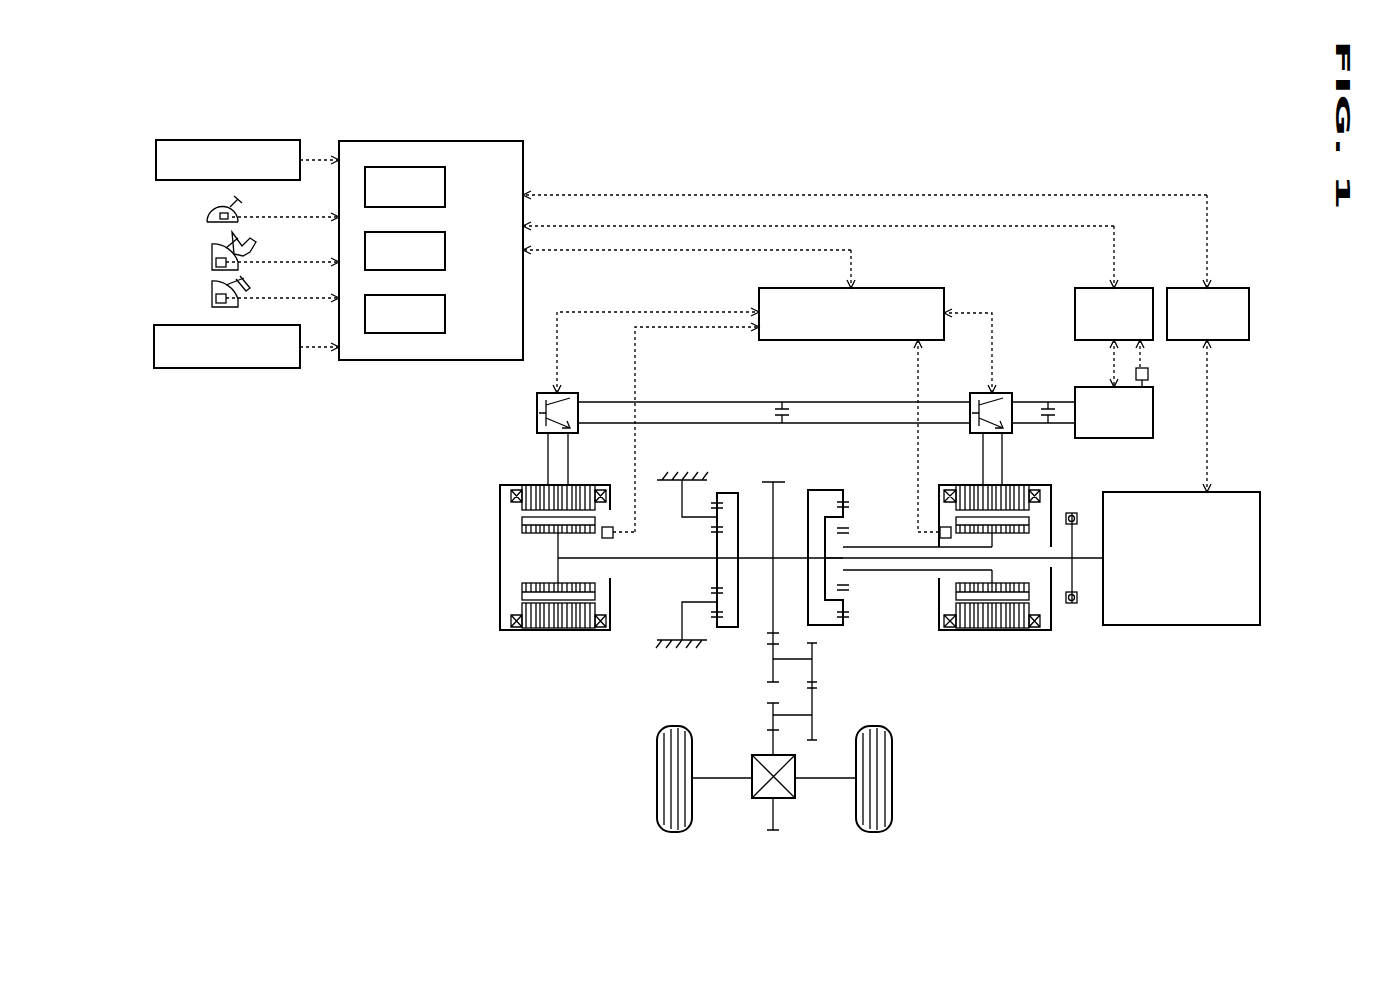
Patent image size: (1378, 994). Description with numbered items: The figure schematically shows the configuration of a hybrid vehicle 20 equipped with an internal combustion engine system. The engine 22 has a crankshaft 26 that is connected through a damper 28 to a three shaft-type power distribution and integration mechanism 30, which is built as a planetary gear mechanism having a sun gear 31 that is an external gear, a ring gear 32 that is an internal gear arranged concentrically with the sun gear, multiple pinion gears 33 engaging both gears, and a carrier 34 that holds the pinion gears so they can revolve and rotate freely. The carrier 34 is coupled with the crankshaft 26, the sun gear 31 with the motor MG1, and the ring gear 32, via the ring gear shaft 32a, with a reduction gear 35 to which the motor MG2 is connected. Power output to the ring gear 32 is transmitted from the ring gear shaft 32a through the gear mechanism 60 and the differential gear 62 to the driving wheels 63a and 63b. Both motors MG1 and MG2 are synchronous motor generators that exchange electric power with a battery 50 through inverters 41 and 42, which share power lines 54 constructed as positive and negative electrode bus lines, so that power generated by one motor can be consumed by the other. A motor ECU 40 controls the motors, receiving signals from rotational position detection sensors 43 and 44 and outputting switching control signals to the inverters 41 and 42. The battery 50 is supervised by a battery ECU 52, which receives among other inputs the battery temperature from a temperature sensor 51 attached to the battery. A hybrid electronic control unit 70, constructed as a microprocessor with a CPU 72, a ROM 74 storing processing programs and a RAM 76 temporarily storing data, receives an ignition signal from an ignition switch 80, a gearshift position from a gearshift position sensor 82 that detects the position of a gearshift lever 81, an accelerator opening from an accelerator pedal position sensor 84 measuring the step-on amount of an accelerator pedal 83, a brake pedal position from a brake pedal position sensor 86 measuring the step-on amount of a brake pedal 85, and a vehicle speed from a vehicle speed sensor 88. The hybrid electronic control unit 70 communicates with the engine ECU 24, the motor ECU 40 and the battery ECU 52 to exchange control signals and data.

The hybrid vehicle 20 is at (1029, 166).
The engine 22 is at (1262, 543).
The engine ECU 24 is at (1225, 288).
The crankshaft 26 is at (1087, 563).
The damper 28 is at (1071, 603).
The power distribution and integration mechanism 30 is at (857, 478).
The sun gear 31 is at (845, 572).
The ring gear 32 is at (845, 615).
The ring gear shaft 32a is at (757, 555).
The pinion gears 33 is at (845, 597).
The carrier 34 is at (820, 530).
The reduction gear 35 is at (728, 471).
The motor ECU 40 is at (890, 288).
The inverter 41 is at (1005, 393).
The inverter 42 is at (560, 393).
The rotational position detection sensor 43 is at (942, 527).
The rotational position detection sensor 44 is at (605, 527).
The battery 50 is at (1112, 438).
The temperature sensor 51 is at (1148, 375).
The battery ECU 52 is at (1090, 288).
The power lines 54 is at (835, 423).
The gear mechanism 60 is at (858, 702).
The differential gear 62 is at (795, 790).
The driving wheel 63a is at (657, 810).
The driving wheel 63b is at (892, 810).
The hybrid electronic control unit 70 is at (430, 141).
The CPU 72 is at (445, 187).
The ROM 74 is at (445, 251).
The RAM 76 is at (445, 314).
The ignition switch 80 is at (156, 151).
The gearshift lever 81 is at (232, 205).
The gearshift position sensor 82 is at (207, 220).
The accelerator pedal 83 is at (240, 243).
The accelerator pedal position sensor 84 is at (212, 264).
The brake pedal 85 is at (240, 285).
The brake pedal position sensor 86 is at (212, 303).
The vehicle speed sensor 88 is at (154, 340).
The motor MG1 is at (1022, 632).
The motor MG2 is at (537, 485).